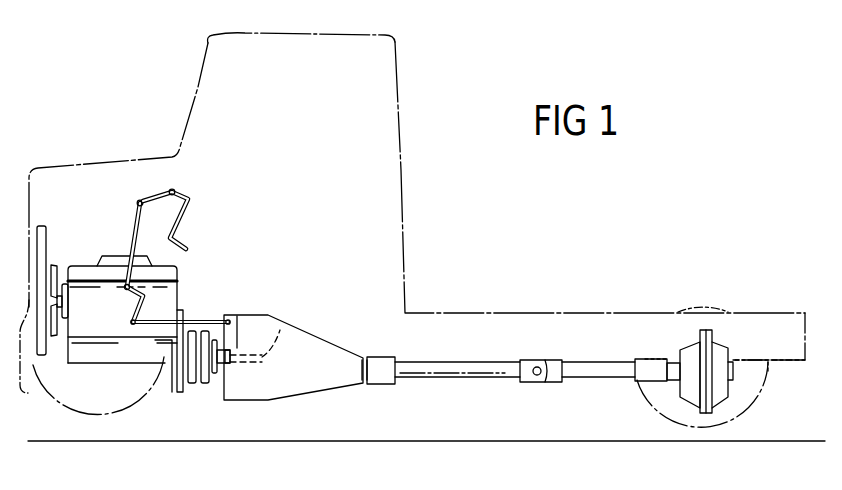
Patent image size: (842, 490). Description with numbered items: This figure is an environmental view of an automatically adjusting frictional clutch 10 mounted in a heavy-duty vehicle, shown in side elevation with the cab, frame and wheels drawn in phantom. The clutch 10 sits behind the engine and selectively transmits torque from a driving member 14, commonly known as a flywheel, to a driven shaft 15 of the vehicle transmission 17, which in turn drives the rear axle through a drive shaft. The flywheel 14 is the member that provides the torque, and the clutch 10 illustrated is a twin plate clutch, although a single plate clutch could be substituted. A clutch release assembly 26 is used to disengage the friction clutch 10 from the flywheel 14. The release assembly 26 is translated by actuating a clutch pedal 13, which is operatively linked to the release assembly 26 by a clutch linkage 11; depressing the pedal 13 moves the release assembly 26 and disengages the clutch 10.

The frictional clutch 10 is at (207, 415).
The clutch linkage 11 is at (135, 228).
The clutch pedal 13 is at (182, 213).
The driving member 14 is at (182, 312).
The driven shaft 15 is at (281, 329).
The vehicle transmission 17 is at (325, 352).
The clutch release assembly 26 is at (237, 318).